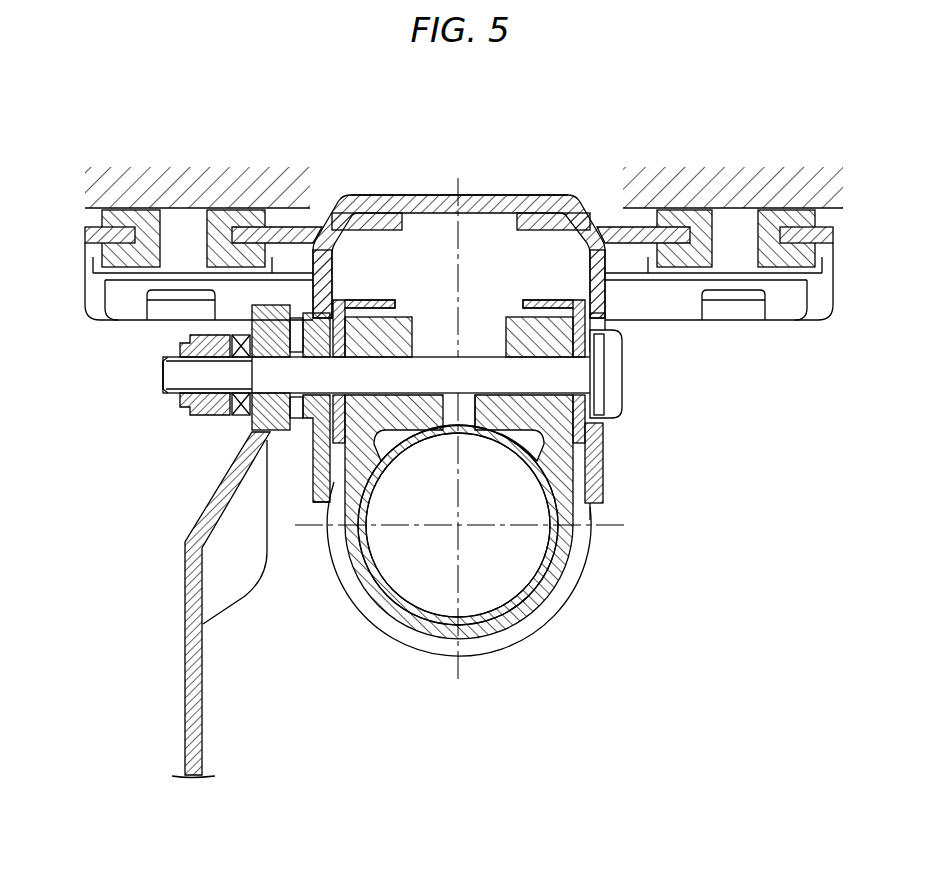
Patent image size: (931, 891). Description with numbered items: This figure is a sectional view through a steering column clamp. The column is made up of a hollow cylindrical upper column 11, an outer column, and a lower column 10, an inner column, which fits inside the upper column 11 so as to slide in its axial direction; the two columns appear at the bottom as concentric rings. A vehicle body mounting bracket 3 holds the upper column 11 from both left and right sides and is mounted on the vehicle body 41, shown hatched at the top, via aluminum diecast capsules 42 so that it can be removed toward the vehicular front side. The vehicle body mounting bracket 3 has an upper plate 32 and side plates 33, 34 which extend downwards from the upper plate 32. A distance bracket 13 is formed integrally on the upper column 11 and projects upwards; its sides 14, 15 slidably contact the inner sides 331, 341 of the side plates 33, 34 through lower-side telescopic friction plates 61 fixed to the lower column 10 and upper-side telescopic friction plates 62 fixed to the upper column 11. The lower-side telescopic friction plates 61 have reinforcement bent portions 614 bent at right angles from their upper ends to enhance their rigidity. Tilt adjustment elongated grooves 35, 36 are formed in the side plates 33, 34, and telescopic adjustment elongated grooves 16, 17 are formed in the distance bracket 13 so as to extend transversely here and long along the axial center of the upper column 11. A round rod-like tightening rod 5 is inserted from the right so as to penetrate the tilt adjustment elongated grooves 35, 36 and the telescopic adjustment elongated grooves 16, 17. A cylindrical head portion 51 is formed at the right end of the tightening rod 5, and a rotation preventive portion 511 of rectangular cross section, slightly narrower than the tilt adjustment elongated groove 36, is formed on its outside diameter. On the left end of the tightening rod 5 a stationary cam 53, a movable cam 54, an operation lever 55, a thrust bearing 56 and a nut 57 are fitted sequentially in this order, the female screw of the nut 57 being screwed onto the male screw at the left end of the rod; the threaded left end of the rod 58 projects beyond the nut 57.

The vehicle body mounting bracket 3 is at (407, 172).
The tightening rod 5 is at (435, 368).
The lower column 10 is at (540, 558).
The upper column 11 is at (477, 634).
The distance bracket 13 is at (400, 318).
The side of distance bracket 14 is at (339, 396).
The side of distance bracket 15 is at (576, 397).
The telescopic adjustment elongated groove 16 is at (378, 360).
The telescopic adjustment elongated groove 17 is at (532, 360).
The upper plate 32 is at (477, 193).
The side plate 33 is at (317, 286).
The side plate 34 is at (607, 290).
The tilt adjustment elongated groove 35 is at (326, 490).
The tilt adjustment elongated groove 36 is at (598, 438).
The vehicle body 41 is at (236, 172).
The capsule 42 is at (151, 212).
The head portion 51 is at (623, 357).
The stationary cam 53 is at (297, 436).
The movable cam 54 is at (272, 426).
The operation lever 55 is at (186, 726).
The thrust bearing 56 is at (238, 420).
The nut 57 is at (181, 348).
The bolt 58 is at (165, 373).
The lower-side telescopic friction plate 61 is at (339, 303).
The upper-side telescopic friction plate 62 is at (335, 357).
The inner side of side plate 331 is at (326, 500).
The inner side of side plate 341 is at (592, 484).
The rotation preventive portion 511 is at (601, 388).
The reinforcement bent portion 614 is at (370, 300).